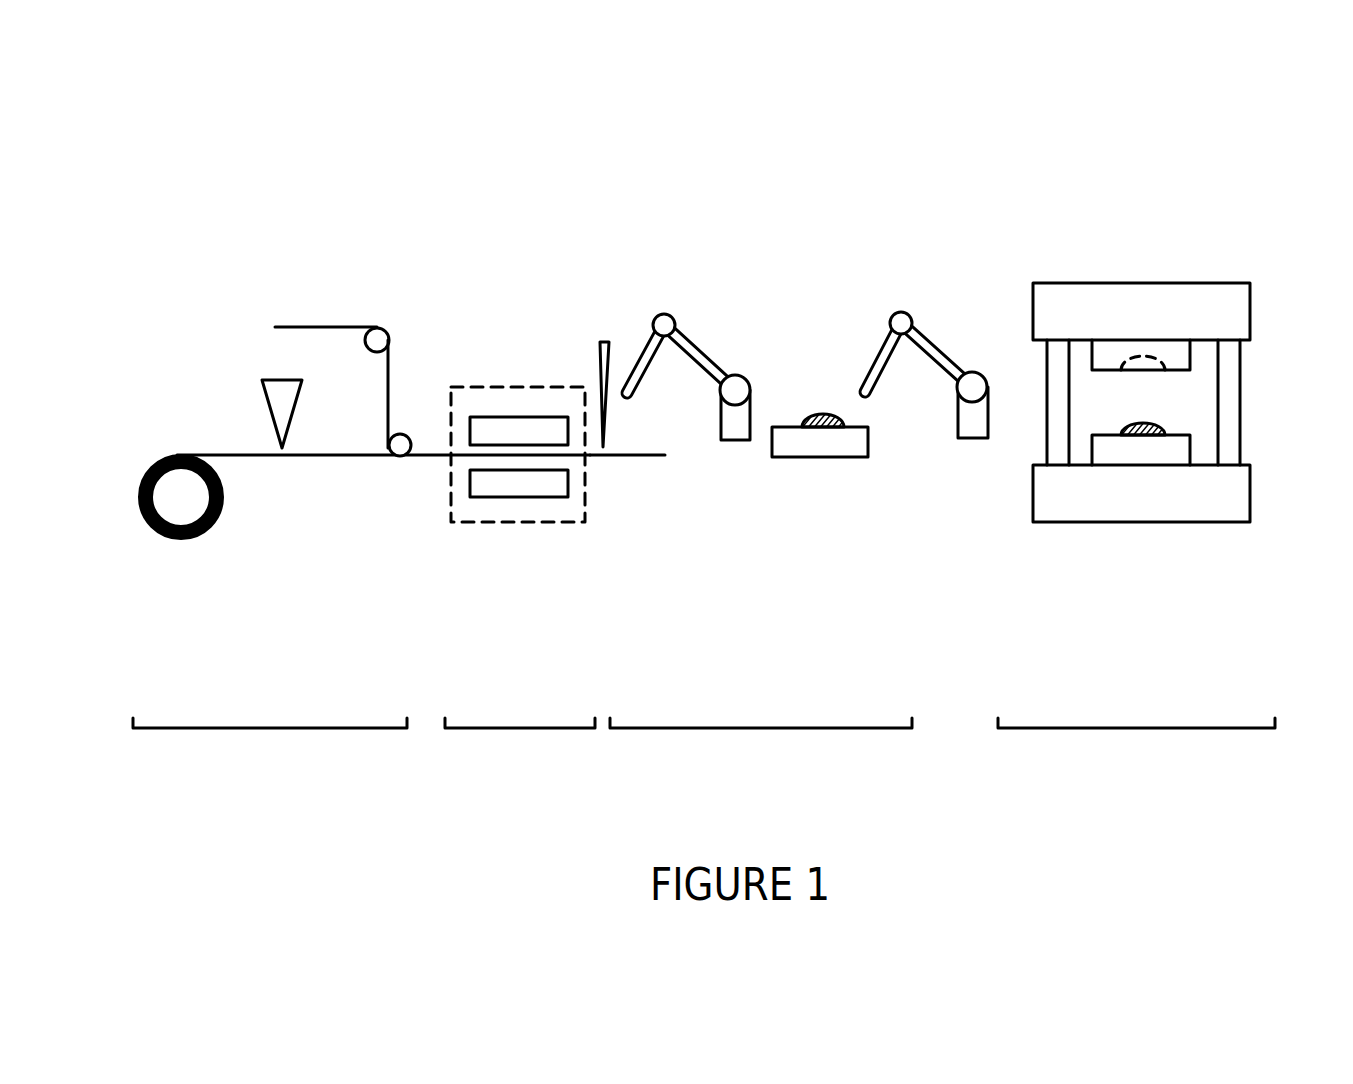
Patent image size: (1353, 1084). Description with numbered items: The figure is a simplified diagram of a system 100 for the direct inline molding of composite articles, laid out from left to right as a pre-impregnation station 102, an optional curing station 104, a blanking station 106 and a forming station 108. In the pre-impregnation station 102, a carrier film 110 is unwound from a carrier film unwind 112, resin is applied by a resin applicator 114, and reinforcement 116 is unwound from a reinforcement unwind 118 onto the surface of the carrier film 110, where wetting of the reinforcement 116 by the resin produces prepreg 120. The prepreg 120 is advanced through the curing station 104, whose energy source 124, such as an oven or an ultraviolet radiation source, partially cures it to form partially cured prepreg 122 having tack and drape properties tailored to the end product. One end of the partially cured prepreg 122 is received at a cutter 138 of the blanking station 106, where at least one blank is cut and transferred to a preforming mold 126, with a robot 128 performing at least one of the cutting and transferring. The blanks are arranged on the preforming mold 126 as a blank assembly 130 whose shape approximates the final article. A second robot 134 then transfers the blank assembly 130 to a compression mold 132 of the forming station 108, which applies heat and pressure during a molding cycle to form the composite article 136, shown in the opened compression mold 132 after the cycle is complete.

The system 100 is at (584, 188).
The pre-impregnation station 102 is at (270, 747).
The curing station 104 is at (520, 747).
The blanking station 106 is at (761, 746).
The forming station 108 is at (1136, 747).
The carrier film 110 is at (240, 455).
The carrier film unwind 112 is at (203, 530).
The resin applicator 114 is at (275, 378).
The reinforcement 116 is at (343, 327).
The reinforcement unwind 118 is at (432, 332).
The prepreg 120 is at (430, 457).
The partially cured prepreg 122 is at (622, 456).
The energy source 124 is at (528, 522).
The preforming mold 126 is at (822, 457).
The robot 128 is at (707, 347).
The blank assembly 130 is at (820, 413).
The compression mold 132 is at (1152, 522).
The robot 134 is at (932, 335).
The composite article 136 is at (1163, 427).
The cutter 138 is at (605, 340).